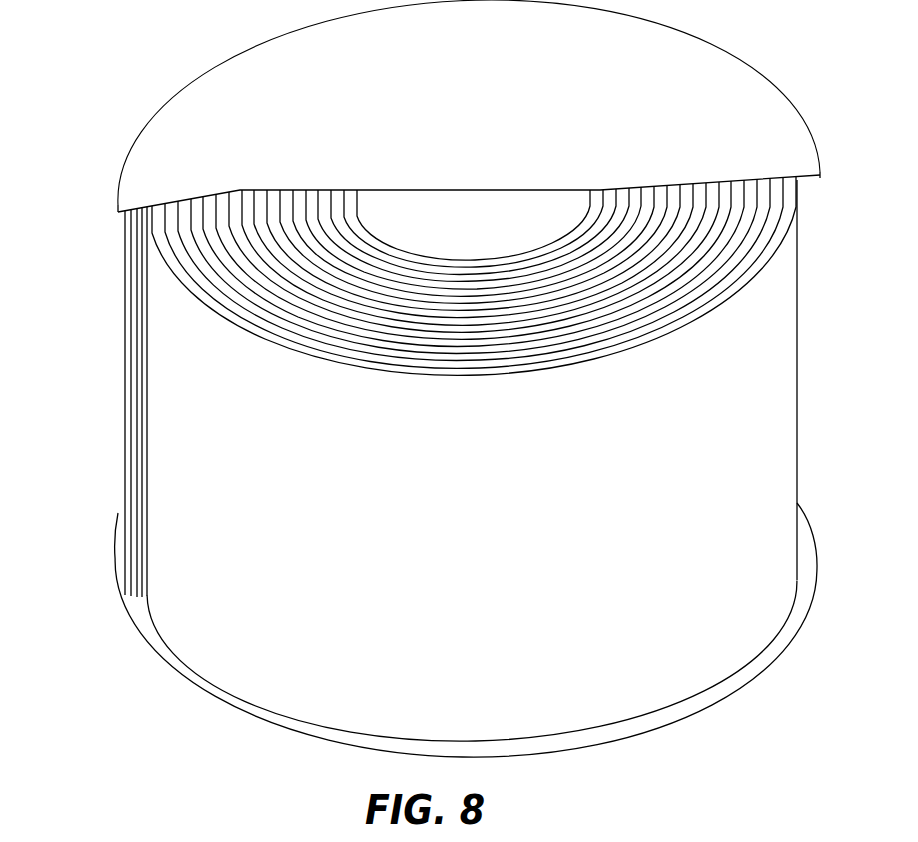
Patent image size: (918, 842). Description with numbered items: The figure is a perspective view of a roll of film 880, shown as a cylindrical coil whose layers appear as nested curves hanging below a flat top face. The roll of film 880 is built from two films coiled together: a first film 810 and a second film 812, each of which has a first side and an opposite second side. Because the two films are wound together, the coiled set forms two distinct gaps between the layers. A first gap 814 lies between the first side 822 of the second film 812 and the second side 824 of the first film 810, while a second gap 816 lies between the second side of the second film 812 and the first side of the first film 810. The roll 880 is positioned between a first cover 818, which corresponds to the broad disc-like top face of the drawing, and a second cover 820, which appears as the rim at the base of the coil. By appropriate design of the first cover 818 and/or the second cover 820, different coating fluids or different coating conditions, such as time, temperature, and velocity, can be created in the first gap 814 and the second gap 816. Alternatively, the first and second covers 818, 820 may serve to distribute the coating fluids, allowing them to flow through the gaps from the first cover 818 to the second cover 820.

The first film 810 is at (362, 210).
The second film 812 is at (357, 213).
The first gap 814 is at (140, 552).
The second gap 816 is at (127, 587).
The first cover 818 is at (267, 57).
The second cover 820 is at (137, 622).
The first side of the second film 822 is at (207, 633).
The second side of the first film 824 is at (552, 200).
The roll of film 880 is at (80, 302).